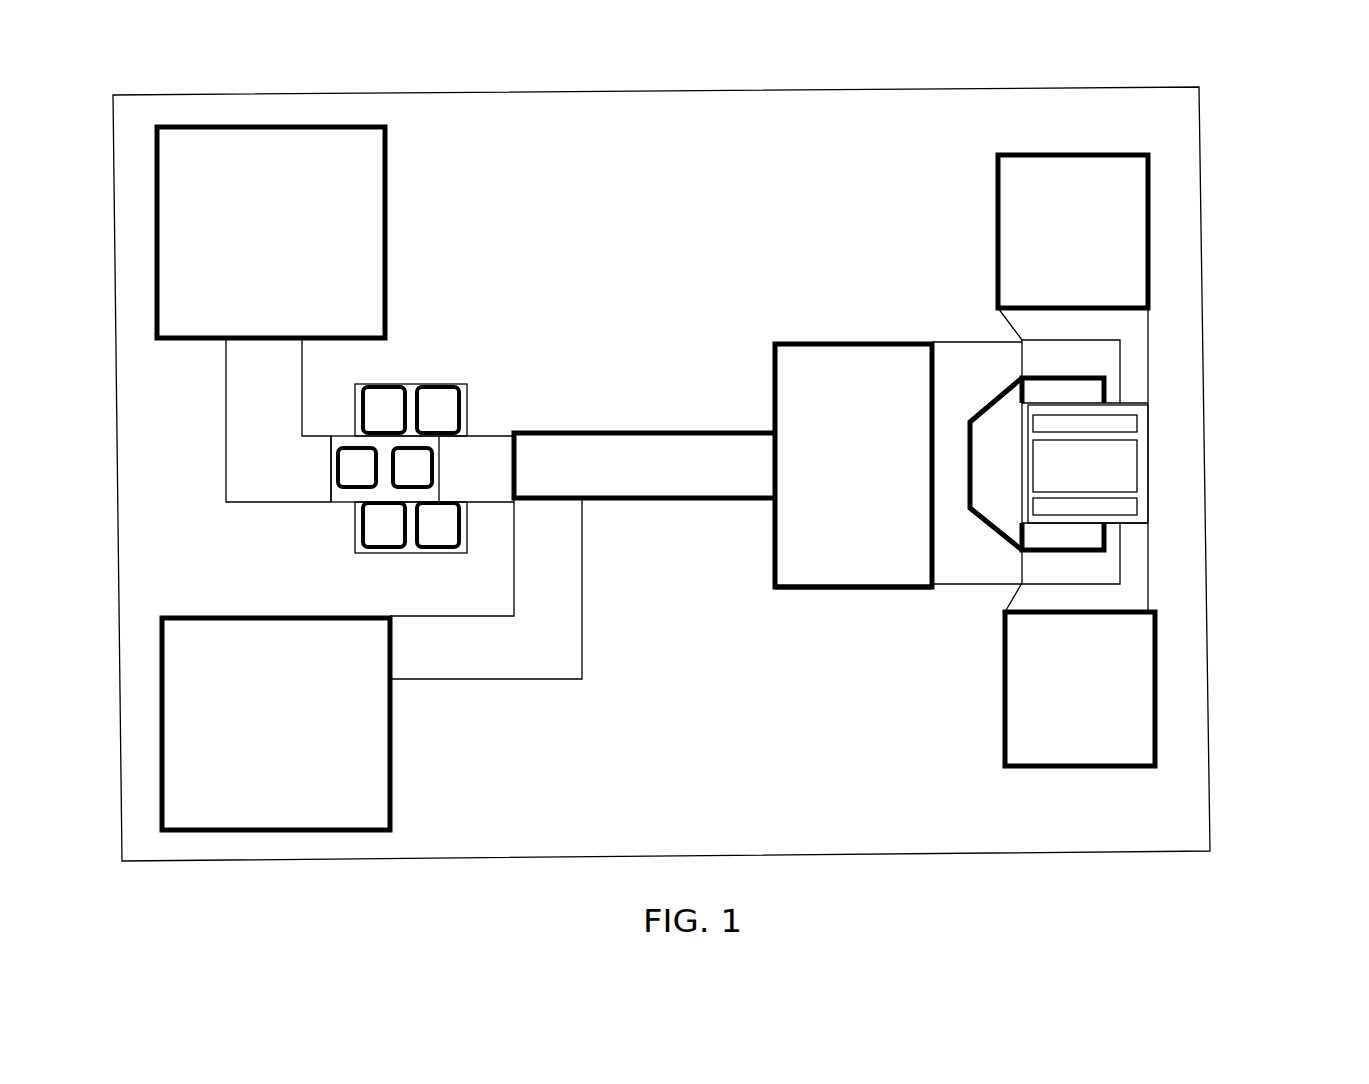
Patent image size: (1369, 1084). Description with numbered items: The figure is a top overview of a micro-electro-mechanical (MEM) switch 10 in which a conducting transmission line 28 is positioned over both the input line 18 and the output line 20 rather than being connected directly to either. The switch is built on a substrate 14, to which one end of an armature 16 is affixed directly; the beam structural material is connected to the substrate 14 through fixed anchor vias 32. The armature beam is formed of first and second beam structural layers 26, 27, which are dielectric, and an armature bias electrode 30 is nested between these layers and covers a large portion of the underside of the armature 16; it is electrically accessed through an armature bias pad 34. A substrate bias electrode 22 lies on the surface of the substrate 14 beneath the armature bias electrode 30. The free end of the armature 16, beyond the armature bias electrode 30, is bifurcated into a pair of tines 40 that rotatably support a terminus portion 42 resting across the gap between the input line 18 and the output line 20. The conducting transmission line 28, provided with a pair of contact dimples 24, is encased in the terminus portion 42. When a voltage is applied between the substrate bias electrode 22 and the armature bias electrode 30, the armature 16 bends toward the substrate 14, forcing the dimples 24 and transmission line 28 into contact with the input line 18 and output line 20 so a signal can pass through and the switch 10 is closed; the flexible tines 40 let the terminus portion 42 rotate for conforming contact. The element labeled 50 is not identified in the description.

The MEM switch 10 is at (475, 413).
The substrate 14 is at (930, 815).
The armature 16 is at (802, 367).
The input line 18 is at (1118, 328).
The output line 20 is at (1123, 590).
The substrate bias electrode 22 is at (850, 560).
The dimples 24 is at (1080, 427).
The first beam structural layer 26 is at (637, 502).
The second beam structural layer 27 is at (644, 529).
The conducting transmission line 28 is at (1123, 467).
The armature bias electrode 30 is at (793, 590).
The fixed anchor vias 32 is at (405, 470).
The armature bias pad 34 is at (472, 634).
The tines 40 is at (995, 355).
The terminus portion 42 is at (1147, 483).
The upper interconnect traces 50 is at (275, 462).